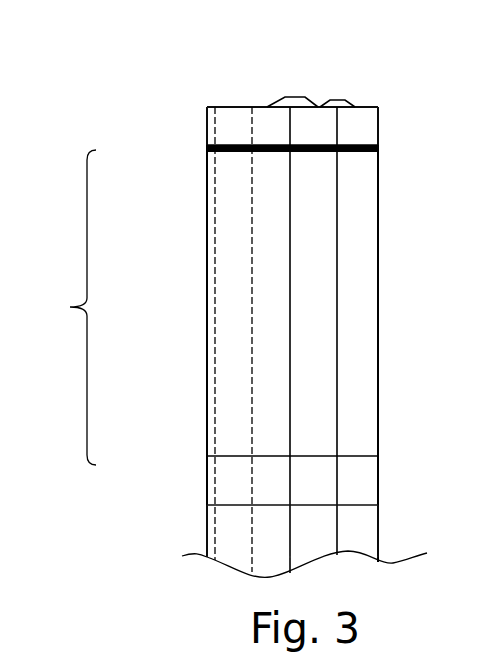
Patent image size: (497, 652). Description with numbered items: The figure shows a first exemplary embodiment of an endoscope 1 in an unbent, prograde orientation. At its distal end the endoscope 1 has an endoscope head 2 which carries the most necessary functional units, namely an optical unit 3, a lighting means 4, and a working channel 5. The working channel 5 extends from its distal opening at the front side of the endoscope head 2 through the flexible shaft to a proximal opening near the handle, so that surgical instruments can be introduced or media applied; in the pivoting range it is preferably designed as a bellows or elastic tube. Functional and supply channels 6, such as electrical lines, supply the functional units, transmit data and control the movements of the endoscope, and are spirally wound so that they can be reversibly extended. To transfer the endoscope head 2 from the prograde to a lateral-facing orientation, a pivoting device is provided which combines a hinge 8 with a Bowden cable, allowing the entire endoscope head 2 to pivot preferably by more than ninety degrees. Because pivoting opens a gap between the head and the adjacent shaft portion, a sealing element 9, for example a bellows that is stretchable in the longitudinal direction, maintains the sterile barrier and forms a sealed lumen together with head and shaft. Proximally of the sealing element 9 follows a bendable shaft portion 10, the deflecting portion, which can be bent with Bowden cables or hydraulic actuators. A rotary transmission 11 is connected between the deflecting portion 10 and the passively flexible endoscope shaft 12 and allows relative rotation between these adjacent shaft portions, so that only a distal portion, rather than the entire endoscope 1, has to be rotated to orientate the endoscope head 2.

The endoscope 1 is at (192, 262).
The endoscope head 2 is at (365, 120).
The optical unit 3 is at (278, 100).
The lighting means 4 is at (327, 102).
The working channel 5 is at (227, 192).
The functional and supply channels 6 is at (291, 305).
The hinge 8 is at (380, 148).
The sealing element 9 is at (207, 145).
The bendable shaft portion 10 is at (67, 307).
The rotary transmission 11 is at (207, 473).
The endoscope shaft 12 is at (207, 547).